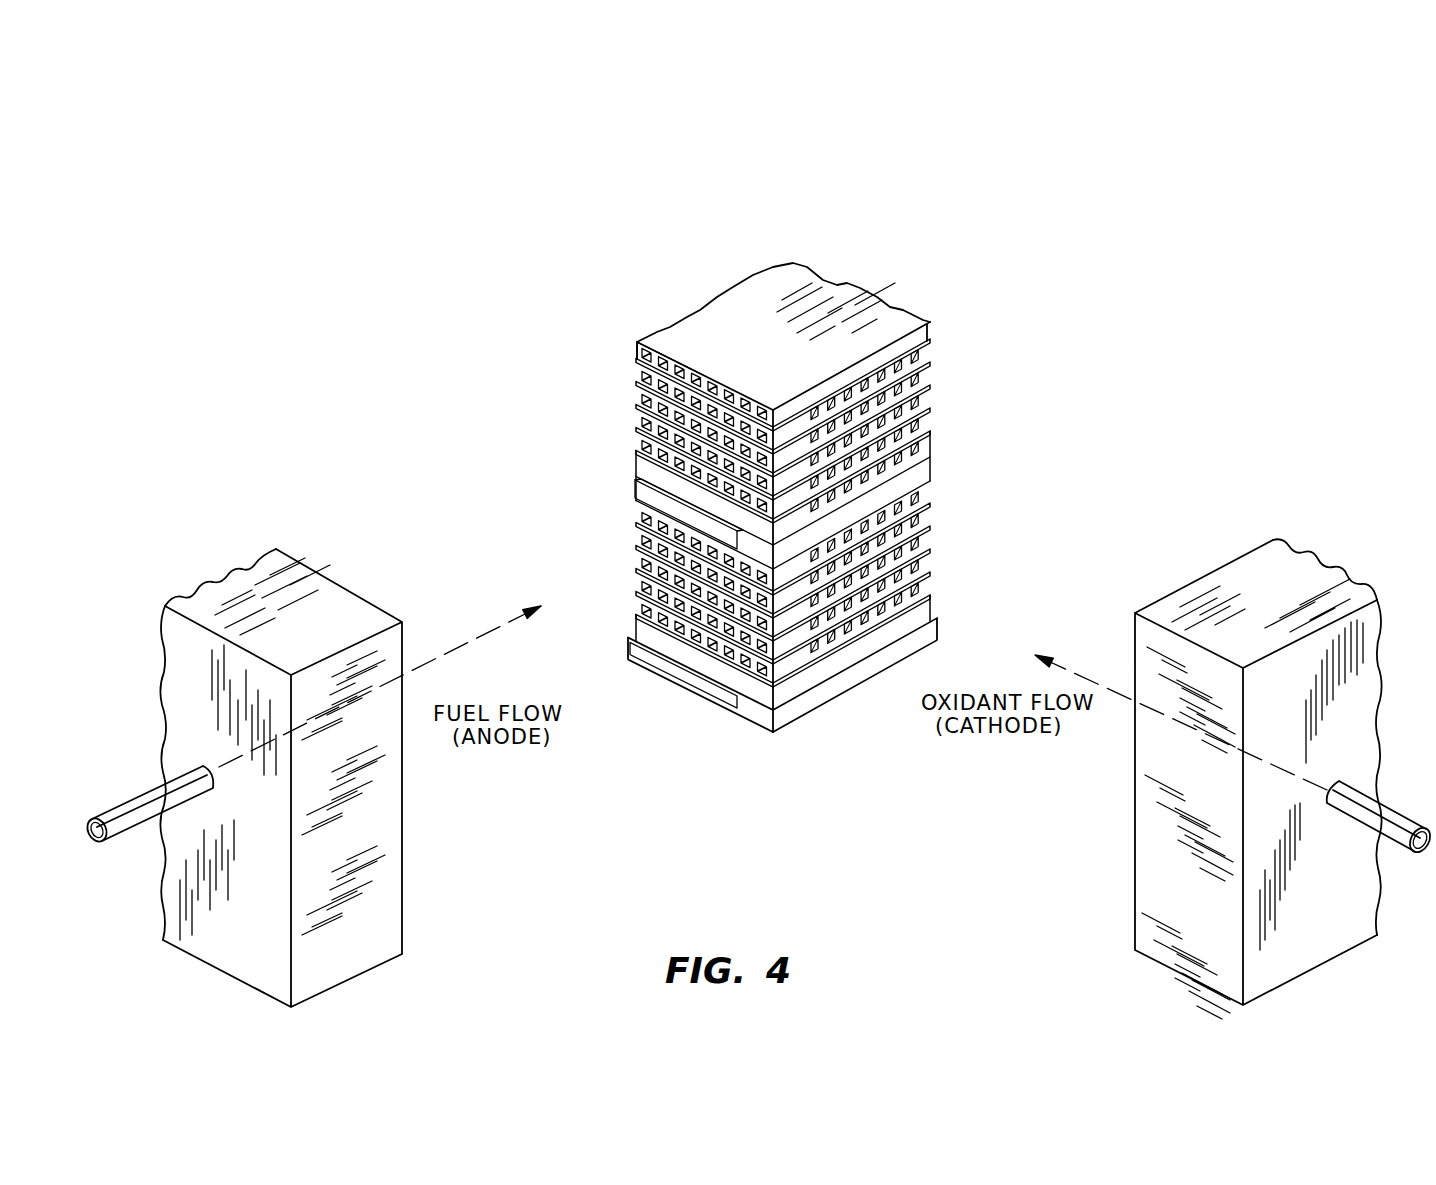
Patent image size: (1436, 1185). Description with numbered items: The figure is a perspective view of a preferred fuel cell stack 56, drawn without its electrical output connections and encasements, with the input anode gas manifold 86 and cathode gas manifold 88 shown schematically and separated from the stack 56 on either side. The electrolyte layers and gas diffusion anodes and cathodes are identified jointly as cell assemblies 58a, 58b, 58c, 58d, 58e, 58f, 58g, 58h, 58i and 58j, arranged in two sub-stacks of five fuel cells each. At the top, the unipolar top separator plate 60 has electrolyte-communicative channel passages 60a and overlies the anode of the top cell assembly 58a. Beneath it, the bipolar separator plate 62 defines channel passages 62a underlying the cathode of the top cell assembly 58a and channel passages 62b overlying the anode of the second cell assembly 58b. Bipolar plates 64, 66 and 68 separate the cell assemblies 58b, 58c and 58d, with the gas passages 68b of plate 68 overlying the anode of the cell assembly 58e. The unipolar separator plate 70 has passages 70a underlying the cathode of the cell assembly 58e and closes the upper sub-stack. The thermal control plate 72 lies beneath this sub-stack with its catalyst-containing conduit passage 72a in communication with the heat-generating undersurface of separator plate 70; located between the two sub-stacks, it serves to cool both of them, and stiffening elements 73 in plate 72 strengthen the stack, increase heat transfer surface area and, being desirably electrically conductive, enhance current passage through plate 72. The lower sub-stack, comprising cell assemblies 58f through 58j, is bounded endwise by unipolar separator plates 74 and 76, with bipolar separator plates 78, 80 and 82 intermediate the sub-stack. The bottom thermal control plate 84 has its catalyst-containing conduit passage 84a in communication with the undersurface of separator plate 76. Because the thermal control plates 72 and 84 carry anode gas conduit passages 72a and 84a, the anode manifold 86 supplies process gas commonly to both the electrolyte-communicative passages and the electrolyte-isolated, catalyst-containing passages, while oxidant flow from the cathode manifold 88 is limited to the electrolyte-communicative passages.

The cell stack 56 is at (912, 270).
The top cell assembly 58a is at (923, 340).
The second cell assembly 58b is at (927, 367).
The cell assembly 58c is at (927, 393).
The cell assembly 58d is at (927, 420).
The cell assembly 58e is at (930, 440).
The cell assembly 58f is at (935, 503).
The cell assembly 58g is at (935, 540).
The cell assembly 58h is at (935, 572).
The cell assembly 58i is at (935, 595).
The cell assembly 58j is at (777, 683).
The top separator plate 60 is at (742, 297).
The electrolyte-communicative channel passages 60a is at (660, 337).
The separator plate 62 is at (783, 437).
The electrolyte-communicative channel passages 62a is at (870, 380).
The electrolyte-communicative channel passages 62b is at (683, 400).
The bipolar plate 64 is at (747, 430).
The bipolar plate 66 is at (637, 380).
The bipolar plate 68 is at (637, 412).
The gas passages 68b is at (635, 437).
The separator plate 70 is at (637, 462).
The passages 70a is at (935, 443).
The thermal control plate 72 is at (935, 465).
The catalyst-containing conduit passage 72a is at (660, 500).
The stiffening elements 73 is at (640, 505).
The unipolar separator plate 74 is at (635, 523).
The unipolar separator plate 76 is at (627, 613).
The bipolar separator plate 78 is at (638, 550).
The bipolar separator plate 80 is at (635, 578).
The bipolar separator plate 82 is at (633, 602).
The thermal control plate 84 is at (750, 713).
The catalyst-containing conduit passage 84a is at (697, 680).
The anode gas manifold 86 is at (238, 580).
The cathode gas manifold 88 is at (1227, 577).